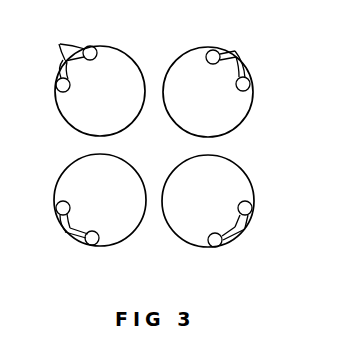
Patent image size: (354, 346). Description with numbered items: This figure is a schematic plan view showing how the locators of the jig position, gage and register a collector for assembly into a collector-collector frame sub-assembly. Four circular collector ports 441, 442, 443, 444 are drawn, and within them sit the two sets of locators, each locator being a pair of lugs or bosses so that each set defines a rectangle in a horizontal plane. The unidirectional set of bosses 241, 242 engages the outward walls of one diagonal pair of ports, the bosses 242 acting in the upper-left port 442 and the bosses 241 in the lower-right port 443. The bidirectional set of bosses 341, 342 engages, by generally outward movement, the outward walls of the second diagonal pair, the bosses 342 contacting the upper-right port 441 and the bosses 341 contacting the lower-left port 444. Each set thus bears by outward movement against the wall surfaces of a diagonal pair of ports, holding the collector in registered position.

The unidirectional locator boss 241 is at (245, 229).
The unidirectional locator boss 242 is at (59, 44).
The bidirectional locator boss 341 is at (65, 232).
The bidirectional locator boss 342 is at (237, 52).
The drum / cylinder 441 is at (208, 92).
The drum / cylinder 442 is at (100, 91).
The drum / cylinder 443 is at (208, 201).
The drum / cylinder 444 is at (100, 200).